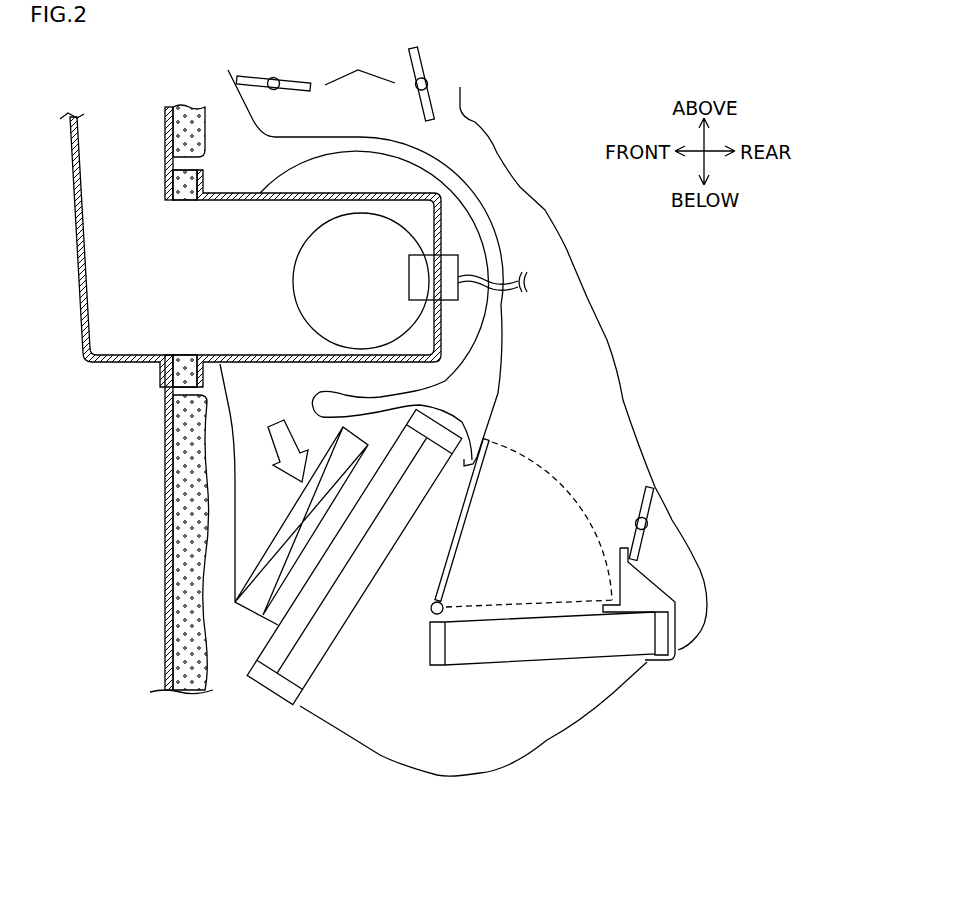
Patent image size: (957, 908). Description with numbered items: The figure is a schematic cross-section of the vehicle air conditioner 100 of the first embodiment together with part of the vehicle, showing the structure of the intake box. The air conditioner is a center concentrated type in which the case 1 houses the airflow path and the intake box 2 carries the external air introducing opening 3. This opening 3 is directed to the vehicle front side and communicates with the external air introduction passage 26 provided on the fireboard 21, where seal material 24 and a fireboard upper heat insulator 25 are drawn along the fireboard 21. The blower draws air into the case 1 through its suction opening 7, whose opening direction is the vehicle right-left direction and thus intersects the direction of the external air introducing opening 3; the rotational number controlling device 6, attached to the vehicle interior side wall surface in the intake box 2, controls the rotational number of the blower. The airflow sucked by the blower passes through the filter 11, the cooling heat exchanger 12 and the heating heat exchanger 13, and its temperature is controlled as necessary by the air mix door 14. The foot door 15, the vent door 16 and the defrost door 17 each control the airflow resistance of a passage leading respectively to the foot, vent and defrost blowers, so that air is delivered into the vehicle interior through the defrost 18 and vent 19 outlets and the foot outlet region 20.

The vehicle air conditioner 100 is at (543, 67).
The case 1 is at (546, 214).
The intake box 2 is at (229, 192).
The external air introducing opening 3 is at (213, 294).
The rotational number controlling device 6 is at (409, 290).
The suction opening 7 is at (343, 276).
The filter 11 is at (285, 519).
The cooling heat exchanger 12 is at (313, 680).
The heating heat exchanger 13 is at (562, 658).
The air mix door 14 is at (475, 521).
The foot door 15 is at (658, 512).
The vent door 16 is at (428, 53).
The defrost door 17 is at (256, 76).
The defrost 18 is at (308, 126).
The vent 19 is at (472, 151).
The lower space 20 is at (680, 564).
The fireboard 21 is at (165, 130).
The seal material 24 is at (180, 202).
The fireboard upper heat insulator 25 is at (190, 118).
The external air introduction passage 26 is at (140, 199).